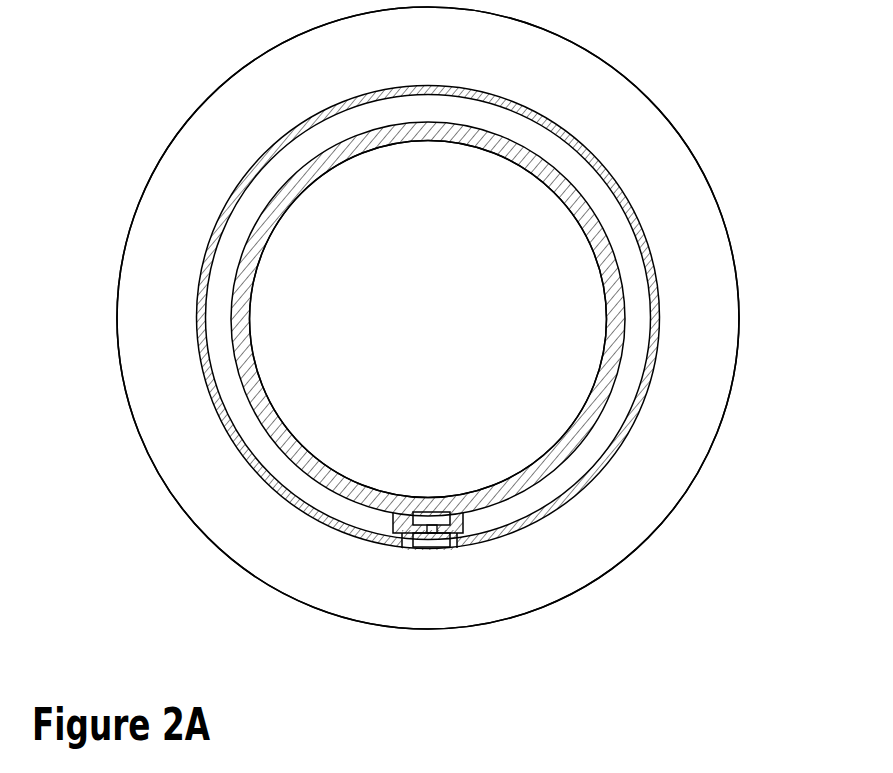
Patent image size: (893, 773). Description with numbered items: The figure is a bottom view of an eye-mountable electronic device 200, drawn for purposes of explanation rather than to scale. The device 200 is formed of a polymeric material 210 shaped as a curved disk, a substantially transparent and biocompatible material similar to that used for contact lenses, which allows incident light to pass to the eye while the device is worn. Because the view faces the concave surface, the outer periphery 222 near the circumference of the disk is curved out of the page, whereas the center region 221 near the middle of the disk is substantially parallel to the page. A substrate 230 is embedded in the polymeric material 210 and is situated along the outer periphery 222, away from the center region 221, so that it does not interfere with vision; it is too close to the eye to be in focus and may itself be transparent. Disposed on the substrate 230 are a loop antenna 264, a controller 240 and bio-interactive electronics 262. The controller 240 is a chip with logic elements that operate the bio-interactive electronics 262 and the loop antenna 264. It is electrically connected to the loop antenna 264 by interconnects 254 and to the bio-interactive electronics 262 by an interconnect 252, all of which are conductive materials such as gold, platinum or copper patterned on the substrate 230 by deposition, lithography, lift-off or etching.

The eye-mountable electronic device 200 is at (200, 33).
The polymeric material 210 is at (172, 443).
The center region 221 is at (460, 297).
The outer periphery 222 is at (217, 550).
The substrate 230 is at (627, 442).
The controller 240 is at (425, 542).
The interconnect 252 is at (413, 513).
The interconnects 254 is at (452, 546).
The bio-interactive electronics 262 is at (441, 516).
The loop antenna 264 is at (547, 498).